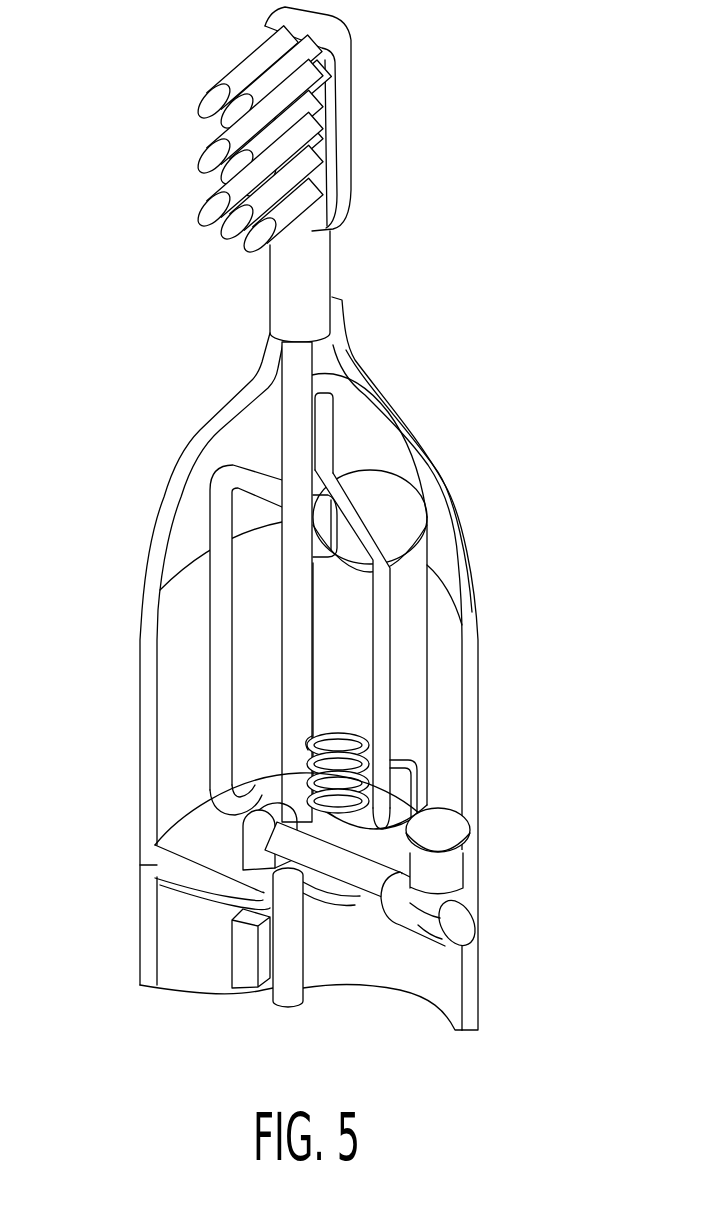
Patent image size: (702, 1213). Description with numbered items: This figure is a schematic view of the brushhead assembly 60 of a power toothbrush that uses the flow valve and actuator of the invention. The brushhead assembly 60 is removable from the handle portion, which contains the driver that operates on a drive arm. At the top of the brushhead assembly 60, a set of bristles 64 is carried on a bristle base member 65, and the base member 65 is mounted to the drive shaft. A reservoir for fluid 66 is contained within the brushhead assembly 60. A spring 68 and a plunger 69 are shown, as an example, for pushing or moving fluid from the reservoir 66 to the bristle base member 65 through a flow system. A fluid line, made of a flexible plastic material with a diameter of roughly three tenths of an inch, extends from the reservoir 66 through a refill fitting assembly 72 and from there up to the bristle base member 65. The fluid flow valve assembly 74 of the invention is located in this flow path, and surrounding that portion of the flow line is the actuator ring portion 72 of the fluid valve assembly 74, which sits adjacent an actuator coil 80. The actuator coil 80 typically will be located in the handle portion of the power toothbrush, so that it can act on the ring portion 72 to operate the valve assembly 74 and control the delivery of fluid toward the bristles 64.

The brushhead assembly 60 is at (468, 421).
The bristles 64 is at (228, 44).
The bristle base member 65 is at (343, 136).
The reservoir for fluid 66 is at (410, 600).
The spring 68 is at (367, 755).
The plunger 69 is at (348, 726).
The refill fitting assembly 72 is at (470, 877).
The fluid flow valve assembly 74 is at (222, 837).
The actuator coil 80 is at (240, 957).